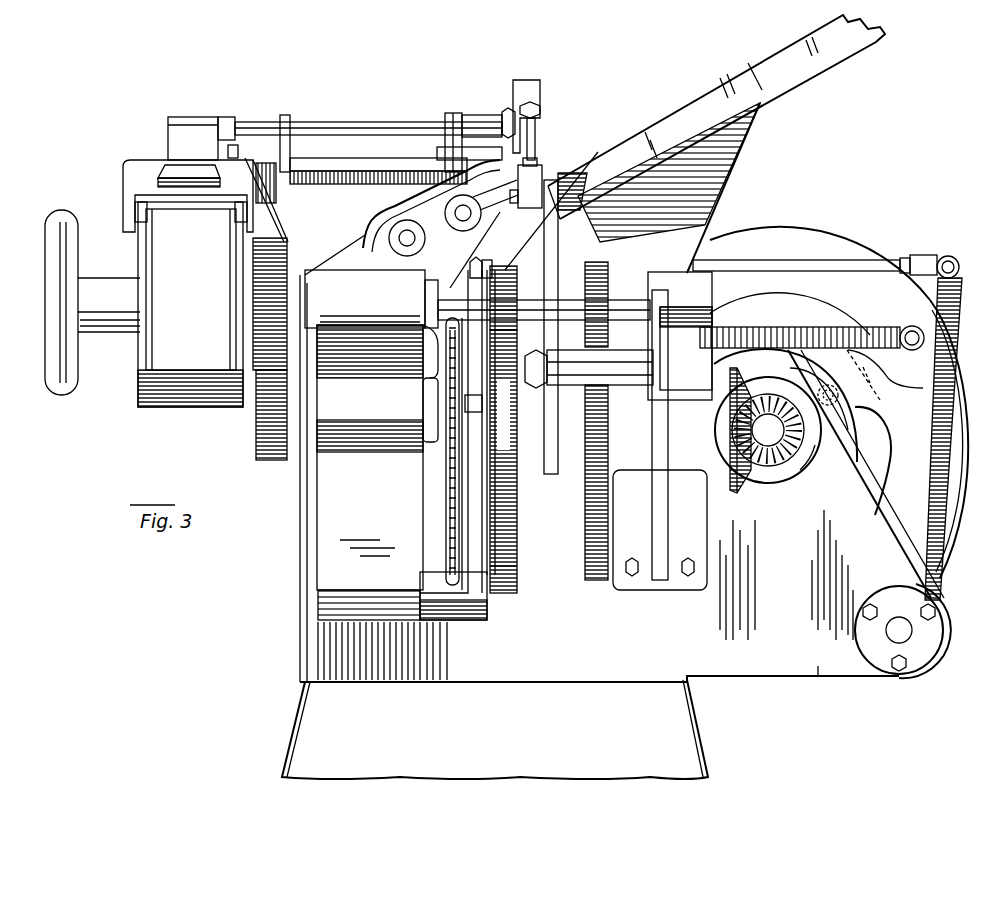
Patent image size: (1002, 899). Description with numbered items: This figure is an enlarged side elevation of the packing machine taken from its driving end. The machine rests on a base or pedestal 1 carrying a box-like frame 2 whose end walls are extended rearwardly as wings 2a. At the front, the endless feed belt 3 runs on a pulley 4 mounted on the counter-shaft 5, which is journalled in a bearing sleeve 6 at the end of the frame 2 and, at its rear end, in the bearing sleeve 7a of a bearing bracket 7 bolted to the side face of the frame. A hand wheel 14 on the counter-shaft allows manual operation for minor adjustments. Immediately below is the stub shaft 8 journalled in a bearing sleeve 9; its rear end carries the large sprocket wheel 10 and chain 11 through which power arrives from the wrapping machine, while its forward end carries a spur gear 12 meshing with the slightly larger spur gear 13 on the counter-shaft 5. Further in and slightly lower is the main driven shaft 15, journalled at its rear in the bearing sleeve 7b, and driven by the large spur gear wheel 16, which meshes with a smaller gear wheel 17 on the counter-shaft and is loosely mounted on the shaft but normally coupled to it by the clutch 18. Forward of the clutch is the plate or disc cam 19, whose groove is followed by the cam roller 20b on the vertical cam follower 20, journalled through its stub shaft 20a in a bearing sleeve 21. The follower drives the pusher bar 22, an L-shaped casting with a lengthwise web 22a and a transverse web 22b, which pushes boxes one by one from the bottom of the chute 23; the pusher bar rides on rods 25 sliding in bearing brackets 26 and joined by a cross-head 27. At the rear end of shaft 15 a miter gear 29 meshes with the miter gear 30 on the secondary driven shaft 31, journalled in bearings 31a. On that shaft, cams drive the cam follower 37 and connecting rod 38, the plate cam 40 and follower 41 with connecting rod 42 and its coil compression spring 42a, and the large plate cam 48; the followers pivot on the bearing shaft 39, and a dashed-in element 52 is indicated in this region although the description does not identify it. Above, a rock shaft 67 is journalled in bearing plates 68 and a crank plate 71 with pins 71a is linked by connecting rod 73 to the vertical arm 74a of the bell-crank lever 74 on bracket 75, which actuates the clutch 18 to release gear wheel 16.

The base or pedestal 1 is at (308, 727).
The box-like frame 2 is at (790, 652).
The wings 2a is at (818, 676).
The endless feed belt 3 is at (185, 408).
The pulley 4 is at (140, 378).
The counter-shaft 5 is at (570, 300).
The bearing sleeve 6 is at (335, 272).
The bearing bracket 7 is at (712, 542).
The bearing sleeve 7a is at (664, 272).
The bearing sleeve 7b is at (692, 470).
The stub shaft 8 is at (437, 445).
The bearing sleeve 9 is at (373, 452).
The sprocket wheel 10 is at (447, 373).
The chain 11 is at (446, 520).
The spur gear 12 is at (262, 436).
The spur gear 13 is at (262, 318).
The hand wheel 14 is at (62, 215).
The main driven shaft 15 is at (472, 442).
The spur gear wheel 16 is at (585, 562).
The gear wheel 17 is at (597, 264).
The clutch 18 is at (518, 508).
The plate or disc cam 19 is at (517, 566).
The cam follower 20 is at (500, 527).
The stub shaft 20a is at (438, 616).
The cam roller 20b is at (465, 403).
The bearing sleeve 21 is at (372, 612).
The pusher bar 22 is at (480, 203).
The web 22a is at (500, 203).
The transverse web 22b is at (542, 178).
The chute 23 is at (675, 108).
The rods 25 is at (420, 242).
The bearing brackets 26 is at (365, 248).
The cross-head 27 is at (488, 260).
The miter gear 29 is at (748, 478).
The miter gear 30 is at (767, 397).
The secondary driven shaft 31 is at (782, 445).
The bearings 31a is at (795, 482).
The cam follower 37 is at (952, 320).
The connecting rod 38 is at (835, 261).
The bearing shaft 39 is at (905, 640).
The plate cam 40 is at (852, 440).
The follower 41 is at (920, 410).
The connecting rod 42 is at (850, 330).
The coil compression spring 42a is at (740, 327).
The plate cam 48 is at (947, 525).
The pin 52 is at (850, 376).
The rock shaft 67 is at (372, 113).
The bearing plates 68 is at (285, 115).
The crank plate 71 is at (523, 80).
The pins 71a is at (506, 110).
The connecting rod 73 is at (536, 140).
The bell-crank lever 74 is at (546, 285).
The vertical arm 74a is at (538, 351).
The bracket 75 is at (625, 353).